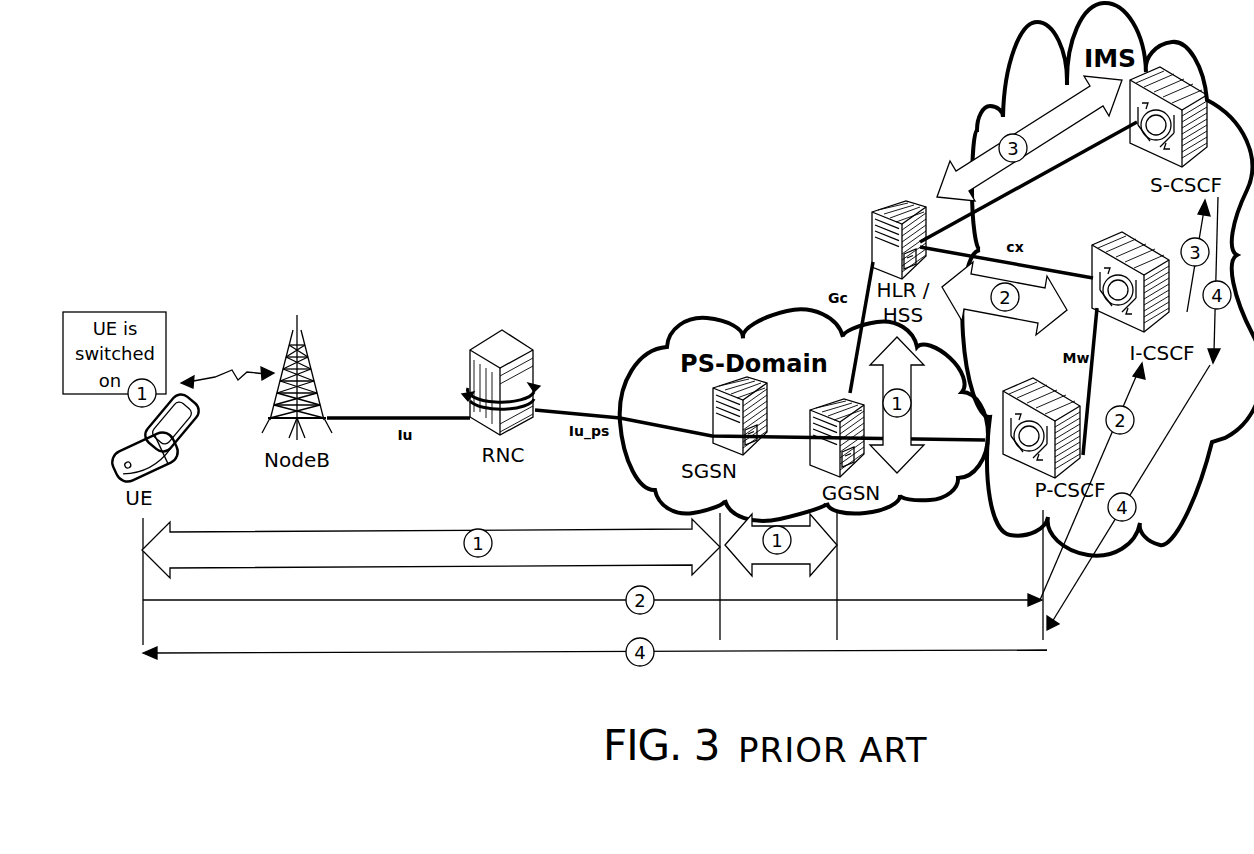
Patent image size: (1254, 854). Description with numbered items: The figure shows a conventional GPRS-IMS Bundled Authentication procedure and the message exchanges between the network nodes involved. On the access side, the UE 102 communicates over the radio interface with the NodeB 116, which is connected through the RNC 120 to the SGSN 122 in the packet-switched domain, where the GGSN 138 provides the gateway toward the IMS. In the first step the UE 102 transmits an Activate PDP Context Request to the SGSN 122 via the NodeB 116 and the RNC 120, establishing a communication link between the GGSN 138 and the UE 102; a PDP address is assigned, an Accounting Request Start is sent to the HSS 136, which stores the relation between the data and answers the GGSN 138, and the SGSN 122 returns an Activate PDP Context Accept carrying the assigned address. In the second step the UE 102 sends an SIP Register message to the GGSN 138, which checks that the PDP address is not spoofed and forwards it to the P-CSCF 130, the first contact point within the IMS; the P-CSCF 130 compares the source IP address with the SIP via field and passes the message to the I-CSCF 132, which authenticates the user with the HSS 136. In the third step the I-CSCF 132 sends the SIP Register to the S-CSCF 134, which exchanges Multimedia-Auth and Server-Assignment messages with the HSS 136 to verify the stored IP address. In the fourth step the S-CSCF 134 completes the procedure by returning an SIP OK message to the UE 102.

The UE 102 is at (121, 471).
The NodeB base station 116 is at (313, 381).
The RNC 120 is at (512, 346).
The SGSN 122 is at (715, 406).
The Proxy Call Session Control Function (P-CSCF) 130 is at (1033, 406).
The Interrogating CSCF (I-CSCF) 132 is at (1115, 251).
The Serving CSCF (S-CSCF) 134 is at (1205, 99).
The Home Subscriber Server (HSS) 136 is at (897, 208).
The GGSN 138 is at (872, 446).